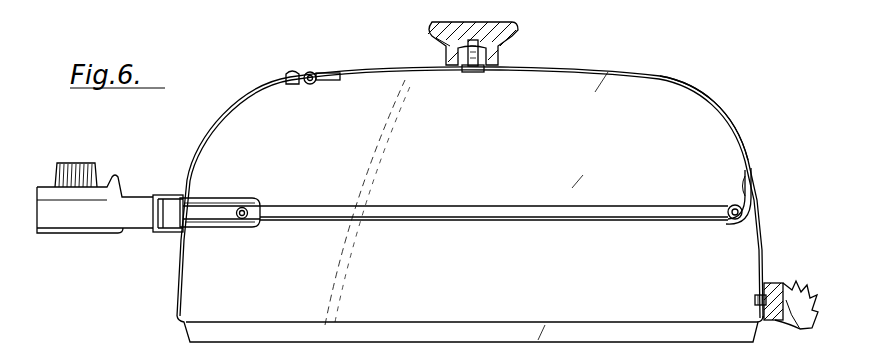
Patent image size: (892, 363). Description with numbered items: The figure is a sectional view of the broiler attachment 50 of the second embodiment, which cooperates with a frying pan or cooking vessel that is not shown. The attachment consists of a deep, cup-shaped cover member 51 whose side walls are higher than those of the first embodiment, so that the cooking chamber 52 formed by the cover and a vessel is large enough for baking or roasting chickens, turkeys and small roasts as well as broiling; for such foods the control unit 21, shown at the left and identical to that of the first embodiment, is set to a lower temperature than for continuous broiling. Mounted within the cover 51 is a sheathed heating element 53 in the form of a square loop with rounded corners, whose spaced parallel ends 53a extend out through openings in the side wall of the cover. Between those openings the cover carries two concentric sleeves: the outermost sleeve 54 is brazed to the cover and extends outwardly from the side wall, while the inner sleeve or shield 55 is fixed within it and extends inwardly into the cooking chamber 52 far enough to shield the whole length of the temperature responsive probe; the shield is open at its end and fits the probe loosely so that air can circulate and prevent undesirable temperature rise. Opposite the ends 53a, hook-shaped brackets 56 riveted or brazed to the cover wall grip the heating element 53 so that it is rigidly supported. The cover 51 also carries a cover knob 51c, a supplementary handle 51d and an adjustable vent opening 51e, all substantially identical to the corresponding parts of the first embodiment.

The control unit 21 is at (72, 242).
The broiler attachment 50 is at (642, 66).
The cover member 51 is at (688, 80).
The cover knob 51c is at (505, 30).
The supplementary handle 51d is at (790, 280).
The adjustable vent opening 51e is at (294, 70).
The cooking chamber 52 is at (490, 163).
The heating element 53 is at (485, 218).
The ends of heating element 53a is at (194, 214).
The outermost sleeve 54 is at (166, 196).
The inner sleeve or shield 55 is at (243, 199).
The hook-shaped brackets 56 is at (729, 222).